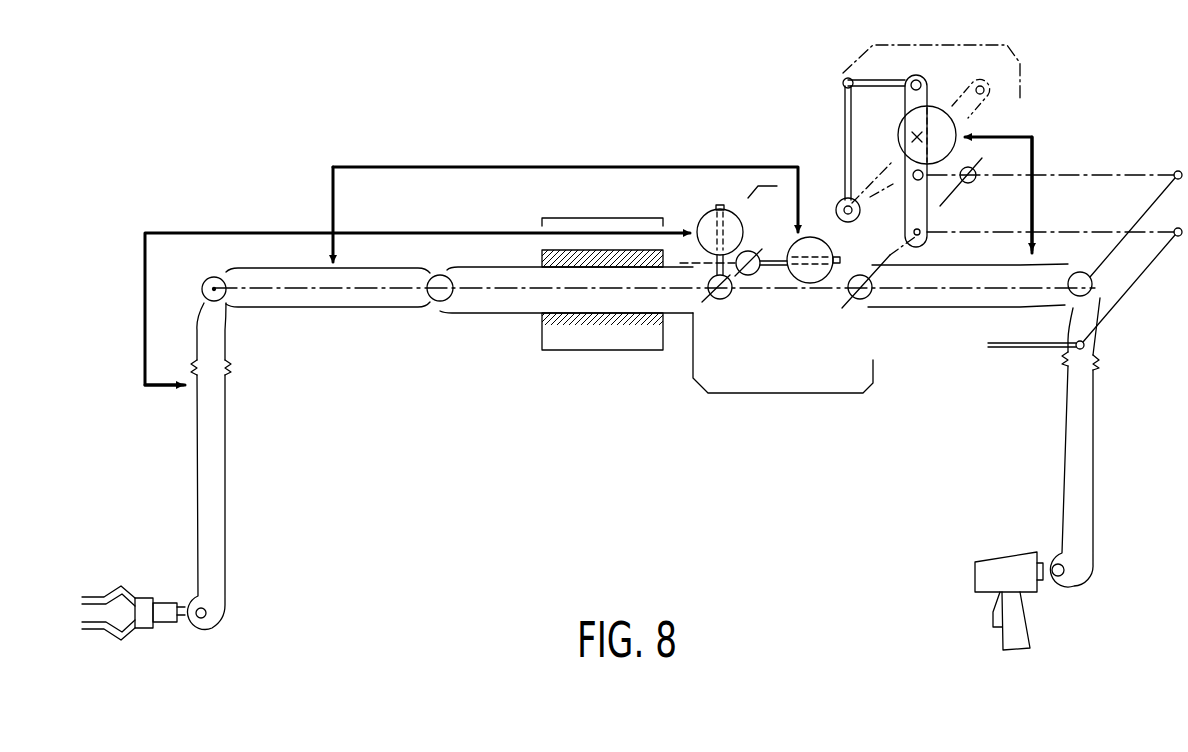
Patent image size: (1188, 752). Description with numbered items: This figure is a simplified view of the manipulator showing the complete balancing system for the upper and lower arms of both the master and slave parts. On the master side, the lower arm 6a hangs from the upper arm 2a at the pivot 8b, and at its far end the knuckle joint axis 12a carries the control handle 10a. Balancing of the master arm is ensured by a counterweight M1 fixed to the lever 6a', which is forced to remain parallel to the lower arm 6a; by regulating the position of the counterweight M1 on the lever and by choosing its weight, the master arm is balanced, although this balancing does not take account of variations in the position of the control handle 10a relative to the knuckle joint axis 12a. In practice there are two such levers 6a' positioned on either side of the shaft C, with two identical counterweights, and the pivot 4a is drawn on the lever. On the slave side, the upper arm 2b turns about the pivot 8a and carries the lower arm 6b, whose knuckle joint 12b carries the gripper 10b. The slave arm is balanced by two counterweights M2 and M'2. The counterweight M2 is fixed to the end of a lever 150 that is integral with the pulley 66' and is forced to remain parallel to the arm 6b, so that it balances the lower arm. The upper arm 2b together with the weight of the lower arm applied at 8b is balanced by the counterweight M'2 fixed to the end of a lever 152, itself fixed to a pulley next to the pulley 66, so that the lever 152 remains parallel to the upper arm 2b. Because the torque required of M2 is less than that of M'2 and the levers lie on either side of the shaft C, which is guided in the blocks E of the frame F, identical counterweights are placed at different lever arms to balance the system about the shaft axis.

The pivot of arm 2b 8a is at (206, 286).
The upper arm 2b is at (370, 297).
The shaft C is at (530, 300).
The guide blocks E is at (613, 333).
The frame F is at (743, 393).
The counterweight M2 is at (712, 212).
The lever 150 is at (712, 263).
The pulley 66' is at (724, 329).
The gear 66 is at (730, 290).
The lever 152 is at (777, 258).
The counterweight M'2 is at (816, 308).
The pivot 4a is at (852, 300).
The lever 6a' is at (928, 146).
The counterweight M1 is at (956, 125).
The point of application of lower arm weight 8b is at (1178, 170).
The arm 2a is at (972, 297).
The lower arm 6a is at (1038, 442).
The knuckle joint axis 12a is at (1073, 575).
The control handle 10a is at (993, 583).
The arm 6b is at (227, 468).
The wrist pivot 12b is at (212, 610).
The gripper 10b is at (152, 625).